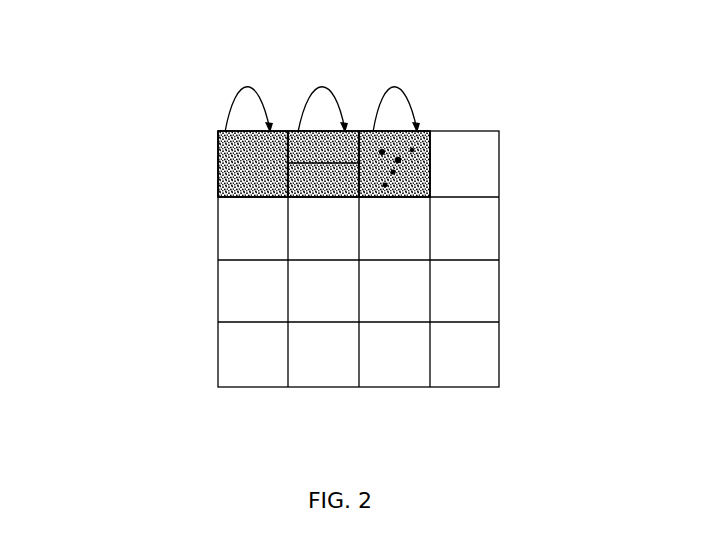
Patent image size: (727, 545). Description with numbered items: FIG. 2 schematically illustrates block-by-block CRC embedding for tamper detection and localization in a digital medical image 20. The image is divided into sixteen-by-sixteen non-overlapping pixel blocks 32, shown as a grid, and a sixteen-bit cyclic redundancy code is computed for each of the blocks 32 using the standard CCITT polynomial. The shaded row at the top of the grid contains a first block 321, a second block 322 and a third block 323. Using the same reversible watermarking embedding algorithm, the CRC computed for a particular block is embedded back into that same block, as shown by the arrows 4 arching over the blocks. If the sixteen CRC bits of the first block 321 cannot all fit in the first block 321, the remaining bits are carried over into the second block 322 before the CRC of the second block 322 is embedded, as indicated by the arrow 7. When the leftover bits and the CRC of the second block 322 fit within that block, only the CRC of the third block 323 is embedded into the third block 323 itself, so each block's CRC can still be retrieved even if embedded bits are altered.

The digital medical image 20 is at (586, 195).
The non-overlapping pixel blocks 32 is at (318, 183).
The first block 321 is at (226, 151).
The second block 322 is at (350, 138).
The third block 323 is at (404, 169).
The arrow 7 is at (340, 163).
The arrows 4 is at (320, 90).